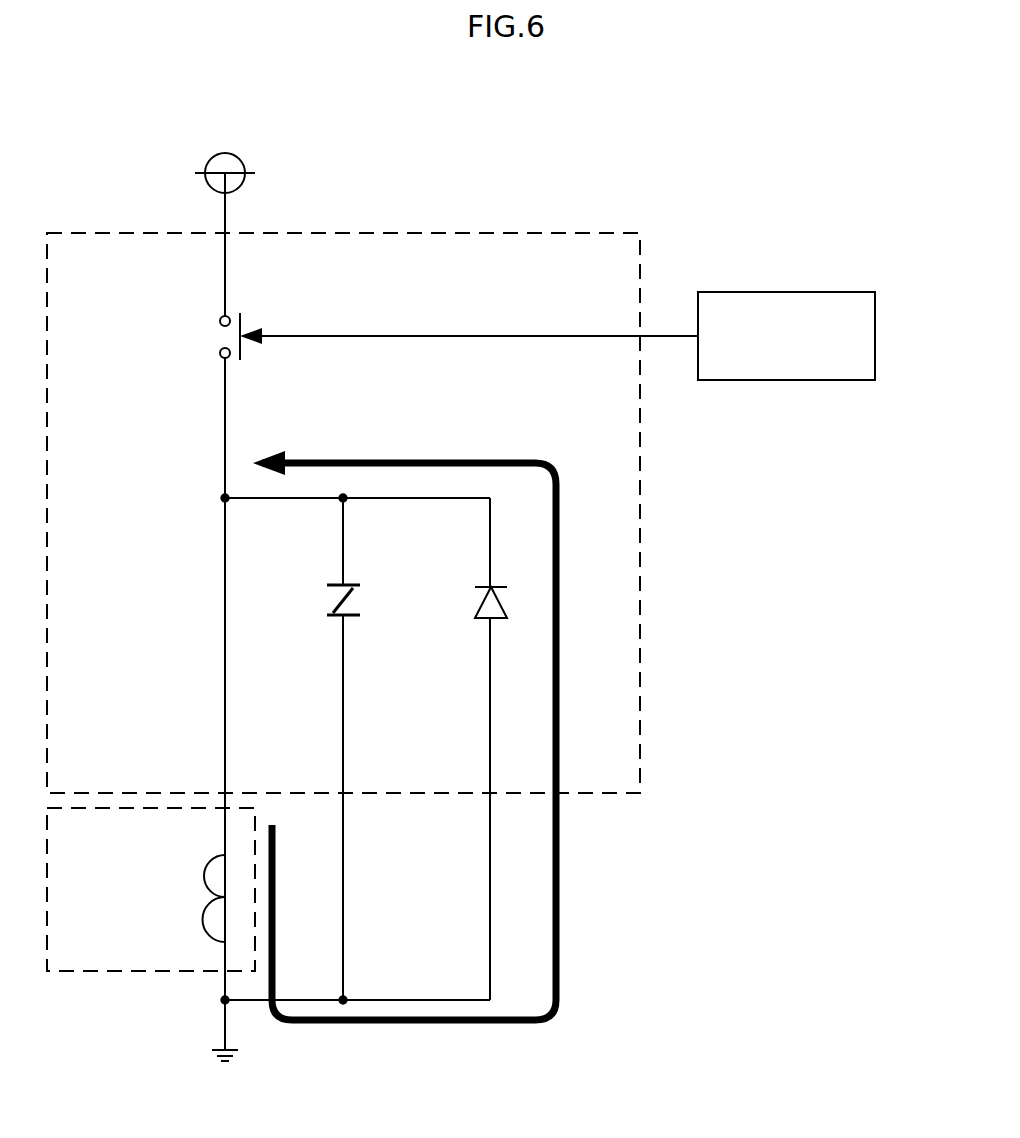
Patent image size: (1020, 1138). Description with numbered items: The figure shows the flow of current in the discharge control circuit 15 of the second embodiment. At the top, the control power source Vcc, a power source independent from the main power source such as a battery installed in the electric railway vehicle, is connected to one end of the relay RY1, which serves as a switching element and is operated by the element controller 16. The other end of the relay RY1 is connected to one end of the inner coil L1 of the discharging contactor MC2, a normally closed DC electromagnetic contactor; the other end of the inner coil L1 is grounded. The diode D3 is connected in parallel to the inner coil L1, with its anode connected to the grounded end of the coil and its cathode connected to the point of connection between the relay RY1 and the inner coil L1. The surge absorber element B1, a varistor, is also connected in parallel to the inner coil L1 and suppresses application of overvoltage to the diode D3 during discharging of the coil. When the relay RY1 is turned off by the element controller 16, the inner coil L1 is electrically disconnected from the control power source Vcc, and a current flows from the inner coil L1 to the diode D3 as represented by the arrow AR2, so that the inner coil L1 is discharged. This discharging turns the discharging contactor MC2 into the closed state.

The control power source Vcc is at (240, 158).
The relay RY1 is at (240, 324).
The discharge control circuit 15 is at (522, 232).
The element controller 16 is at (764, 292).
The surge absorber element B1 is at (358, 585).
The diode D3 is at (497, 587).
The arrow AR2 is at (560, 898).
The inner coil L1 is at (208, 897).
The discharging contactor MC2 is at (150, 972).